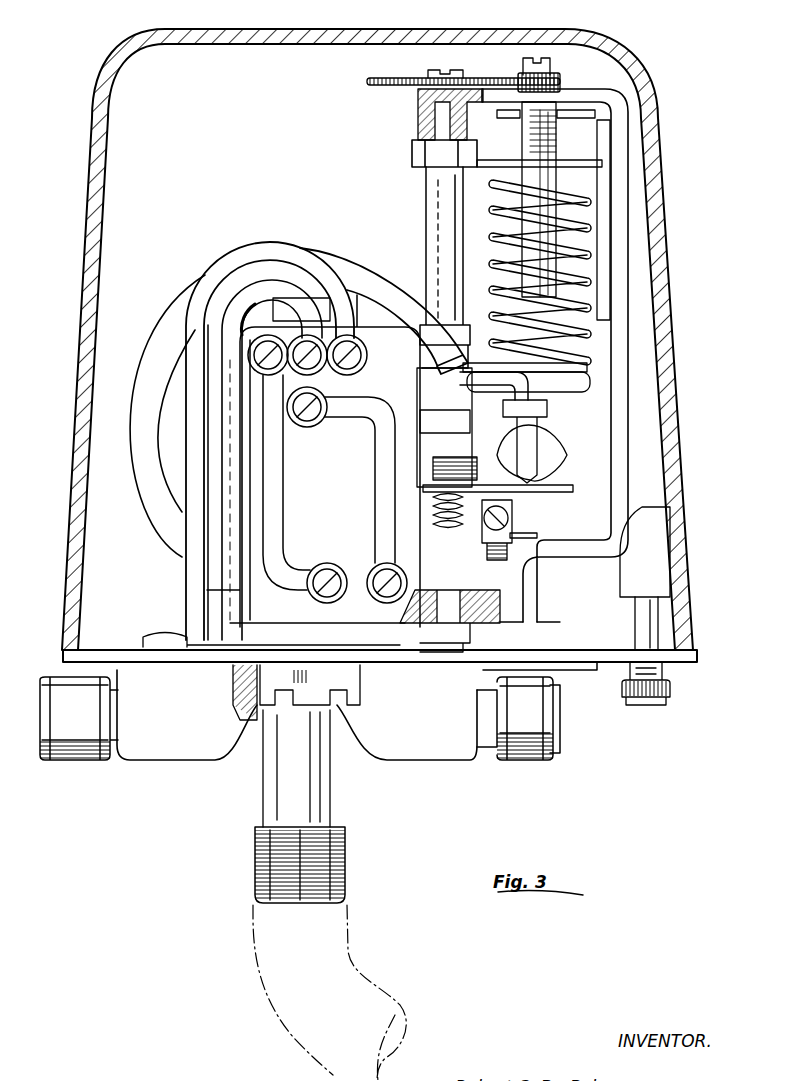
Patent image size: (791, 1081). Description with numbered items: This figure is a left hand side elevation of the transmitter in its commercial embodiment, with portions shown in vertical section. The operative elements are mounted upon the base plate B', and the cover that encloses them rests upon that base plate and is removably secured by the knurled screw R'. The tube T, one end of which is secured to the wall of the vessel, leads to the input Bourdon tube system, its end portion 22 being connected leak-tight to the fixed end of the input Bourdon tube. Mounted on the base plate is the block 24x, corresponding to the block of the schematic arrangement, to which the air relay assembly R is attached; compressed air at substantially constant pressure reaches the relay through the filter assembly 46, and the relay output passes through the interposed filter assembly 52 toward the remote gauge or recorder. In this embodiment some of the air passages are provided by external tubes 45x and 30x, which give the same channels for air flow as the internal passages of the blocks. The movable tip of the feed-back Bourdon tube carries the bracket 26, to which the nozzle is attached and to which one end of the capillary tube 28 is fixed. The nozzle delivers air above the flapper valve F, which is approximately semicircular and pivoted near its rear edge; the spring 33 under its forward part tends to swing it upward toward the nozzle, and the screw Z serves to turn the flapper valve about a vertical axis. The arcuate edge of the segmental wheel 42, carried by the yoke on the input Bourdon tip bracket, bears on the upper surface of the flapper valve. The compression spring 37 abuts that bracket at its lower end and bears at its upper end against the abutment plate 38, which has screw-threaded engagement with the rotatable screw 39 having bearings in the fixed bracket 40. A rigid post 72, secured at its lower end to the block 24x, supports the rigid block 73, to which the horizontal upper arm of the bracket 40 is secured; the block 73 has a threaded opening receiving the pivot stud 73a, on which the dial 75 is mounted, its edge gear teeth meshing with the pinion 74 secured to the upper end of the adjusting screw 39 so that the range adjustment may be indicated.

The end portion of the tube T 22 is at (667, 373).
The block 24x is at (510, 593).
The bracket 26 is at (578, 405).
The capillary tube 28 is at (468, 378).
The tube 30x is at (228, 482).
The spring 33 is at (452, 531).
The compression spring 37 is at (500, 226).
The abutment plate 38 is at (487, 170).
The rotatable screw 39 is at (551, 68).
The fixed bracket 40 is at (618, 180).
The segmental wheel 42 is at (555, 465).
The tube 45x is at (193, 555).
The filter assembly 46 is at (41, 765).
The filter assembly 52 is at (397, 285).
The rigid post 72 is at (432, 215).
The rigid block 73 is at (418, 127).
The pivot stud 73a is at (458, 78).
The pinion 74 is at (562, 84).
The dial 75 is at (370, 79).
The flapper valve F is at (512, 490).
The screw Z is at (514, 526).
The air relay R is at (275, 457).
The knurled screw R' is at (697, 691).
The base plate B' is at (636, 661).
The tube T is at (350, 966).